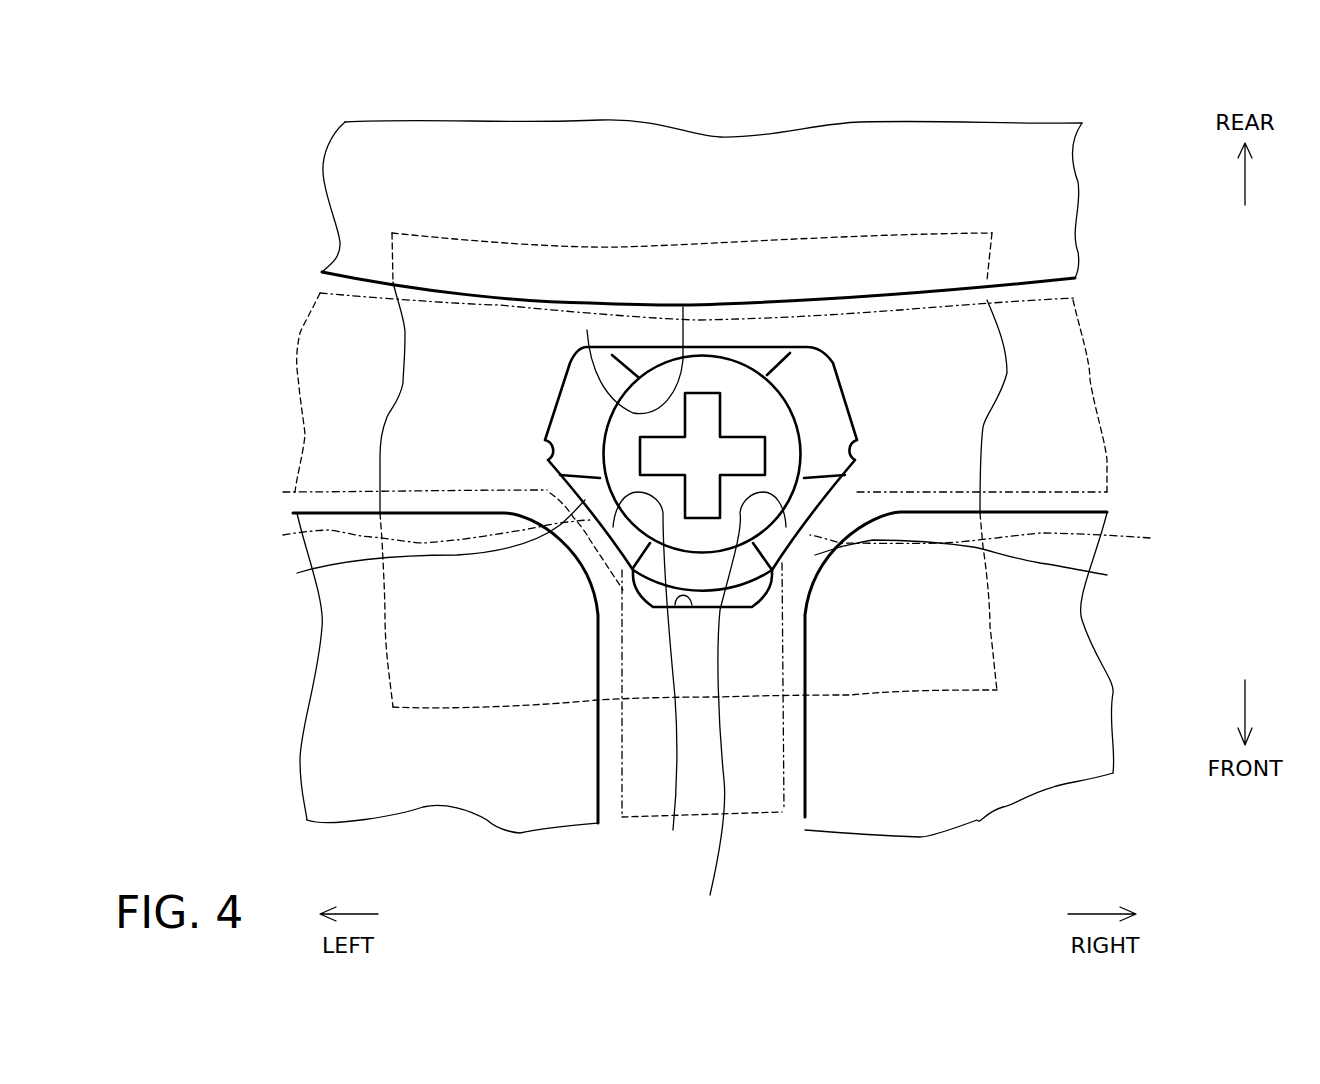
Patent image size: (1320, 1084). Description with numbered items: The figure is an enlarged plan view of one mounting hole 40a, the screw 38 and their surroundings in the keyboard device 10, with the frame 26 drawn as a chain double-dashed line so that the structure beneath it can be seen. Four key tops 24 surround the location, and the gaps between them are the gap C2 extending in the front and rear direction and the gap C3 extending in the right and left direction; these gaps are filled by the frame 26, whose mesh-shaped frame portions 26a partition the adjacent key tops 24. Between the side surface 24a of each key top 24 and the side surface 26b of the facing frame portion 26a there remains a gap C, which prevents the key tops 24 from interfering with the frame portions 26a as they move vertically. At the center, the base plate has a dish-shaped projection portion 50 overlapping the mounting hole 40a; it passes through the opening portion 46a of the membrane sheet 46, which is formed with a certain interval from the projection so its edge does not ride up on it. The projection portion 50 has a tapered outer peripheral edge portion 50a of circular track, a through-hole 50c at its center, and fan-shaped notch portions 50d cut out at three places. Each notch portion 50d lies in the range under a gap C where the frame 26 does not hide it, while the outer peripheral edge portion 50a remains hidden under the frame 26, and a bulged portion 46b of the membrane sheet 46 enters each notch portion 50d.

The keyboard device 10 is at (244, 68).
The key top 24 is at (703, 153).
The side surface 24a is at (683, 307).
The frame 26 is at (641, 820).
The frame portion 26a is at (332, 366).
The side surface 26b is at (283, 535).
The screw 38 is at (655, 387).
The mounting hole 40a is at (710, 895).
The membrane sheet 46 is at (988, 427).
The opening portion 46a is at (547, 440).
The bulged portion 46b is at (612, 355).
The projection portion 50 is at (808, 397).
The outer peripheral edge portion 50a is at (812, 417).
The through-hole 50c is at (773, 352).
The notch portion 50d is at (600, 513).
The gap C is at (713, 337).
The gap C2 is at (764, 790).
The gap C3 is at (1047, 392).